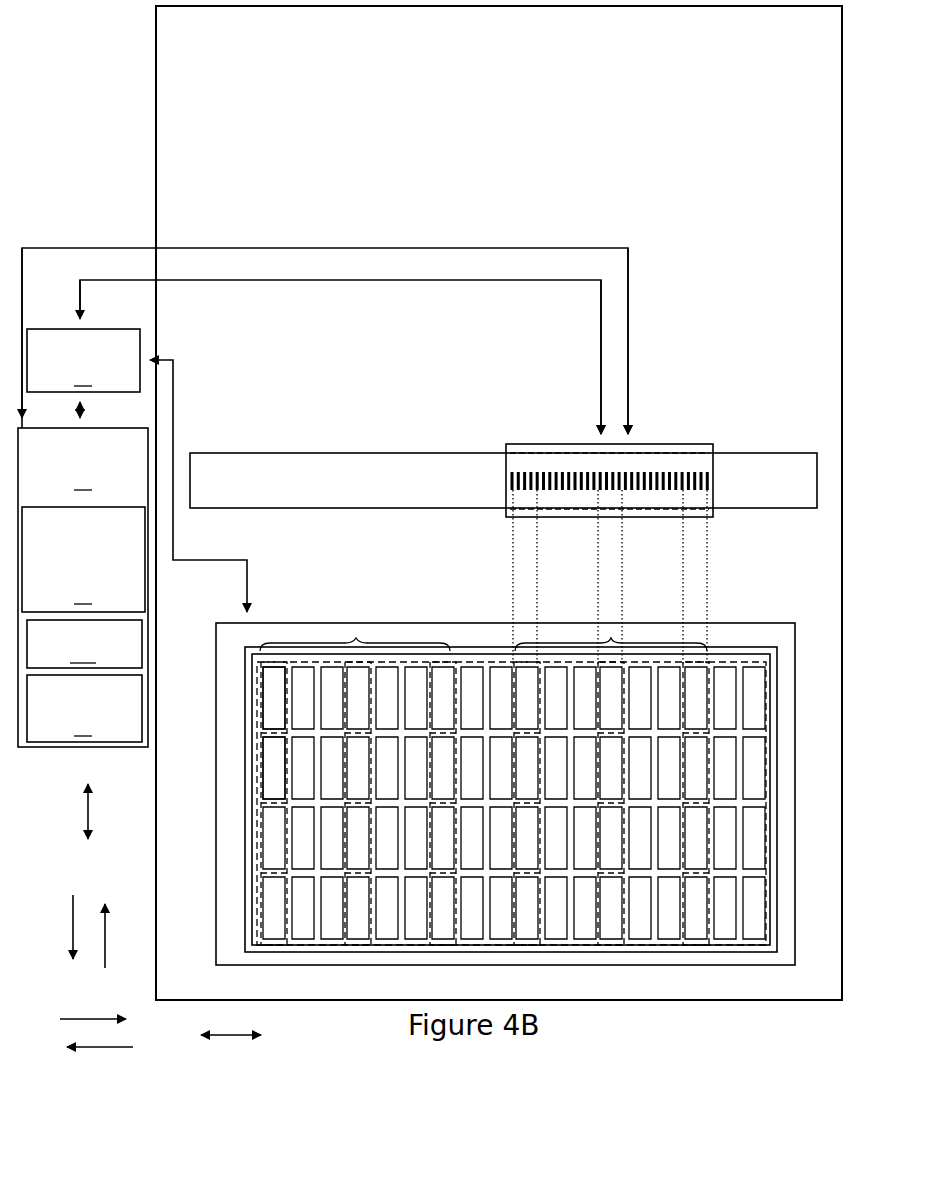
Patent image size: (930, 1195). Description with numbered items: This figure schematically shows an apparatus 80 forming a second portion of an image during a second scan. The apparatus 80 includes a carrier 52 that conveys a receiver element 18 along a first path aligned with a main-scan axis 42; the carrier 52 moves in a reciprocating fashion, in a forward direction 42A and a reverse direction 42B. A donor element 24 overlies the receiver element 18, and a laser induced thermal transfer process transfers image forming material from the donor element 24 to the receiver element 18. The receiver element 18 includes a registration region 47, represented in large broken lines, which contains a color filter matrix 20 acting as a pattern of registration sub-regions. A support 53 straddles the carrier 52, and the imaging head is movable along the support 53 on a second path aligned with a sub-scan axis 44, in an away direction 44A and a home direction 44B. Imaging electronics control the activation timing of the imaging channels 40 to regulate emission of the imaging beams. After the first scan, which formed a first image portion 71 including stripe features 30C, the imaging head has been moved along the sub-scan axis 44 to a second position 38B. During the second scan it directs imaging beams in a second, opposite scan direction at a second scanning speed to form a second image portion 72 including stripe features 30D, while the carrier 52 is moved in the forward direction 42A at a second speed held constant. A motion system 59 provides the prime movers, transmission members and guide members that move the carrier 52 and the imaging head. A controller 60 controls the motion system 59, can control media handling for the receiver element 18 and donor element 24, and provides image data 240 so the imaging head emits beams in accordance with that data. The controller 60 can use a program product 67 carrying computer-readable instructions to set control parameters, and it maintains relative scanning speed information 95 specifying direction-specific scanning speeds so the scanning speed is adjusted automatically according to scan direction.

The apparatus 80 is at (778, 1000).
The support 53 is at (253, 452).
The motion system 59 is at (83, 360).
The controller 60 is at (83, 587).
The relative scanning speed information 95 is at (83, 559).
The image data 240 is at (84, 644).
The program product 67 is at (84, 708).
The second position 38B is at (553, 426).
The imaging channels 40 is at (707, 492).
The first image portion 71 is at (355, 635).
The second image portion 72 is at (611, 635).
The carrier 52 is at (215, 778).
The receiver element 18 is at (246, 858).
The donor element 24 is at (250, 727).
The registration region 47 is at (258, 683).
The color filter matrix 20 is at (288, 803).
The stripe features 30C is at (464, 985).
The stripe features 30D is at (722, 985).
The main-scan axis 42 is at (84, 790).
The forward direction 42A is at (103, 913).
The reverse direction 42B is at (72, 947).
The sub-scan axis 44 is at (216, 1035).
The away direction 44A is at (72, 1018).
The home direction 44B is at (119, 1045).